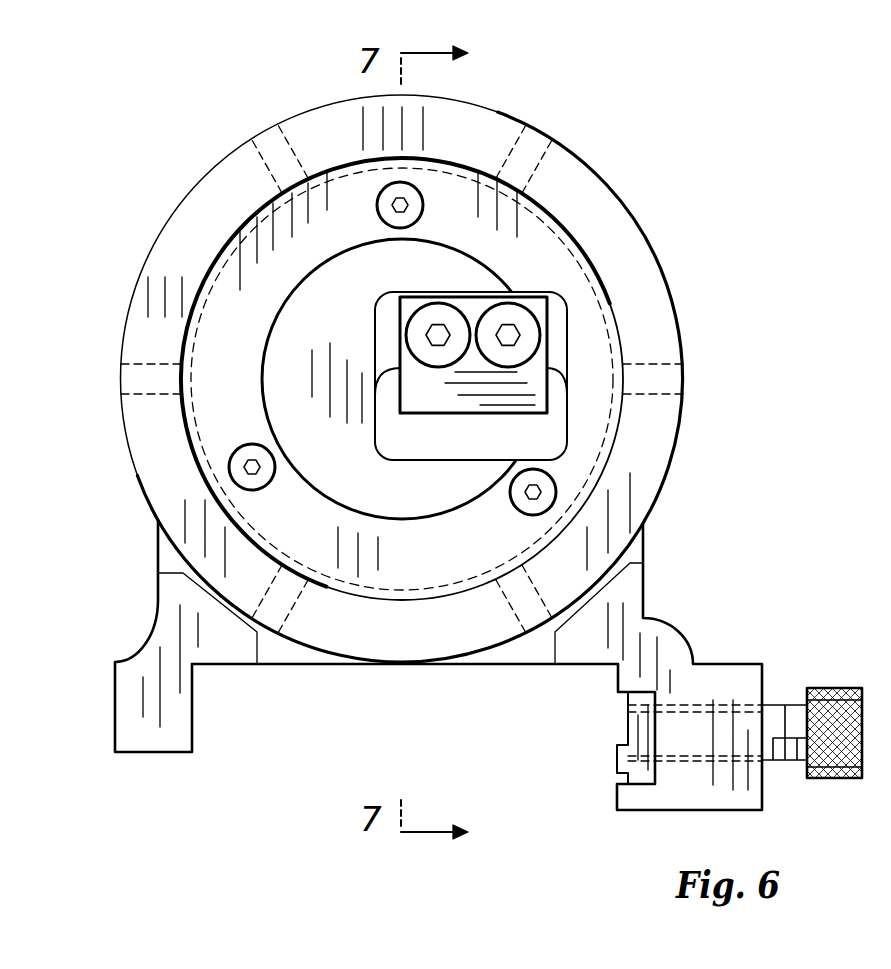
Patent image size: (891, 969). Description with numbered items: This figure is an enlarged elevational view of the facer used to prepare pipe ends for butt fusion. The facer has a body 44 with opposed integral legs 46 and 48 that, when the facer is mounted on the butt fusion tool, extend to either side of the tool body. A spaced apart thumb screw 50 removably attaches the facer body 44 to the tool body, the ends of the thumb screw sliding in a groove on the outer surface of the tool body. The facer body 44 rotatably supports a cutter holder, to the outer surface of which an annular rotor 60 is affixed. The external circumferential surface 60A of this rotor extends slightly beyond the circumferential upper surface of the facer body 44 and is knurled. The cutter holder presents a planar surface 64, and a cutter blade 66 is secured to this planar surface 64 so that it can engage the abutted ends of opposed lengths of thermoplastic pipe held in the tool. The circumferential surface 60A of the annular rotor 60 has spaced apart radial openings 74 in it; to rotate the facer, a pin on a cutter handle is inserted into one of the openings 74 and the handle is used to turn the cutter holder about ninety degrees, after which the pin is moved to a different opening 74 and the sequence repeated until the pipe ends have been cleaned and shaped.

The facer body 44 is at (640, 590).
The leg 46 is at (147, 742).
The leg 48 is at (680, 790).
The thumb screw 50 is at (835, 688).
The annular rotor 60 is at (208, 205).
The external circumferential surface 60A is at (307, 110).
The planar surface 64 is at (348, 463).
The cutter blade 66 is at (487, 415).
The radial opening 74 is at (540, 150).